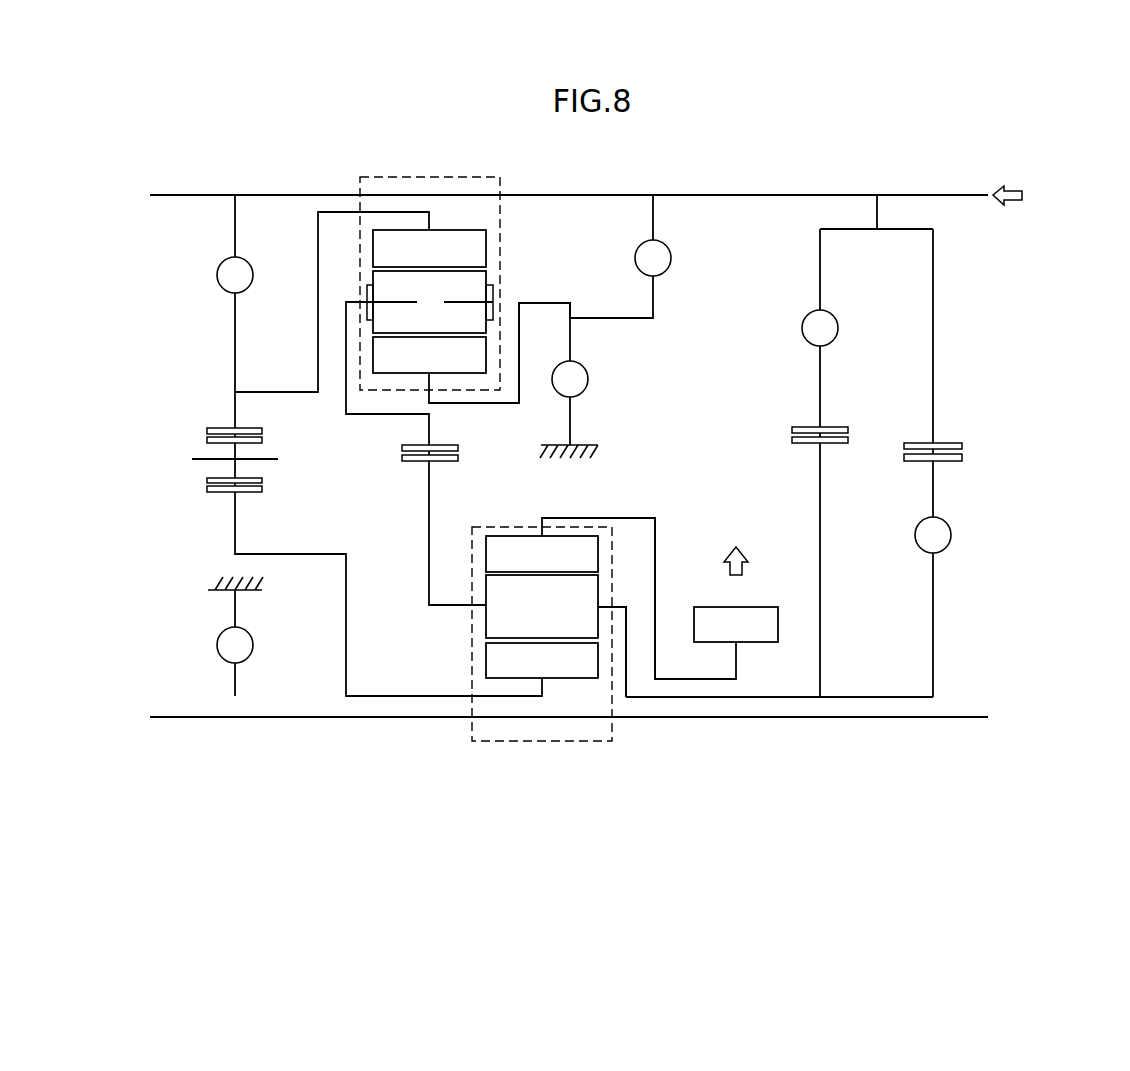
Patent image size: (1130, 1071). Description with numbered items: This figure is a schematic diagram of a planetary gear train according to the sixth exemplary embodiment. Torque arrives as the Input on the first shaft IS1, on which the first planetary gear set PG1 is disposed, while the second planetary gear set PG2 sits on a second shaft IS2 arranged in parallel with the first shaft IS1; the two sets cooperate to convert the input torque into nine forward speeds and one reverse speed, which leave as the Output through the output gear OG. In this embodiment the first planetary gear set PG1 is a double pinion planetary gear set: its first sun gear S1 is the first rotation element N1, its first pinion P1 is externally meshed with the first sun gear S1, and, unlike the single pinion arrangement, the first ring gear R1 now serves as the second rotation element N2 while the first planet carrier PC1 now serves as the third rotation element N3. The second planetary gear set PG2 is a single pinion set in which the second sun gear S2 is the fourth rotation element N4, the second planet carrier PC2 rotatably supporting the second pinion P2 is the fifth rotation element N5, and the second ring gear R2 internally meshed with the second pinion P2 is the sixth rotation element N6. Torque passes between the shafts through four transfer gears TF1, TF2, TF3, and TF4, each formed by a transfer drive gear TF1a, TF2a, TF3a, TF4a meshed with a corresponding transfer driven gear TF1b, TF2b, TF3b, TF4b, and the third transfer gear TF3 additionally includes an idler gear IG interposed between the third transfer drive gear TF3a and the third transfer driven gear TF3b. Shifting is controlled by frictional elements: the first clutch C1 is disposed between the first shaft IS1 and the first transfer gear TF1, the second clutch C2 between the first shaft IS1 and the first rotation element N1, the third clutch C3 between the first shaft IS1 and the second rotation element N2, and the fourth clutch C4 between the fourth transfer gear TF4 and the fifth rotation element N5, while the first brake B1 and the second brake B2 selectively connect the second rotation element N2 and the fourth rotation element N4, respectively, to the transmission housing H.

The first planetary gear set PG1 is at (430, 254).
The second planetary gear set PG2 is at (580, 651).
The first rotation element N1 is at (429, 248).
The first sun gear S1 is at (429, 248).
The first pinion P1 is at (430, 302).
The second rotation element N2 is at (429, 355).
The first ring gear R1 is at (429, 355).
The third rotation element N3 is at (554, 325).
The first planet carrier PC1 is at (535, 302).
The fourth rotation element N4 is at (542, 660).
The second sun gear S2 is at (542, 660).
The fifth rotation element N5 is at (663, 604).
The second planet carrier PC2 is at (622, 606).
The sixth rotation element N6 is at (542, 554).
The second ring gear R2 is at (542, 554).
The second pinion P2 is at (542, 606).
The first shaft IS1 is at (766, 194).
The second shaft IS2 is at (786, 719).
The first clutch C1 is at (820, 328).
The second clutch C2 is at (235, 275).
The third clutch C3 is at (653, 258).
The fourth clutch C4 is at (933, 535).
The first brake B1 is at (570, 379).
The second brake B2 is at (235, 645).
The first transfer gear TF1 is at (764, 434).
The first transfer drive gear TF1a is at (792, 429).
The first transfer driven gear TF1b is at (785, 449).
The second transfer gear TF2 is at (374, 452).
The second transfer drive gear TF2a is at (402, 448).
The second transfer driven gear TF2b is at (402, 458).
The third transfer gear TF3 is at (177, 458).
The third transfer drive gear TF3a is at (207, 431).
The third transfer driven gear TF3b is at (193, 492).
The idler gear IG is at (233, 454).
The fourth transfer gear TF4 is at (990, 453).
The fourth transfer drive gear TF4a is at (962, 446).
The fourth transfer driven gear TF4b is at (962, 457).
The transmission housing H is at (590, 450).
The output gear OG is at (736, 624).
The input Input is at (1028, 195).
The output Output is at (736, 574).